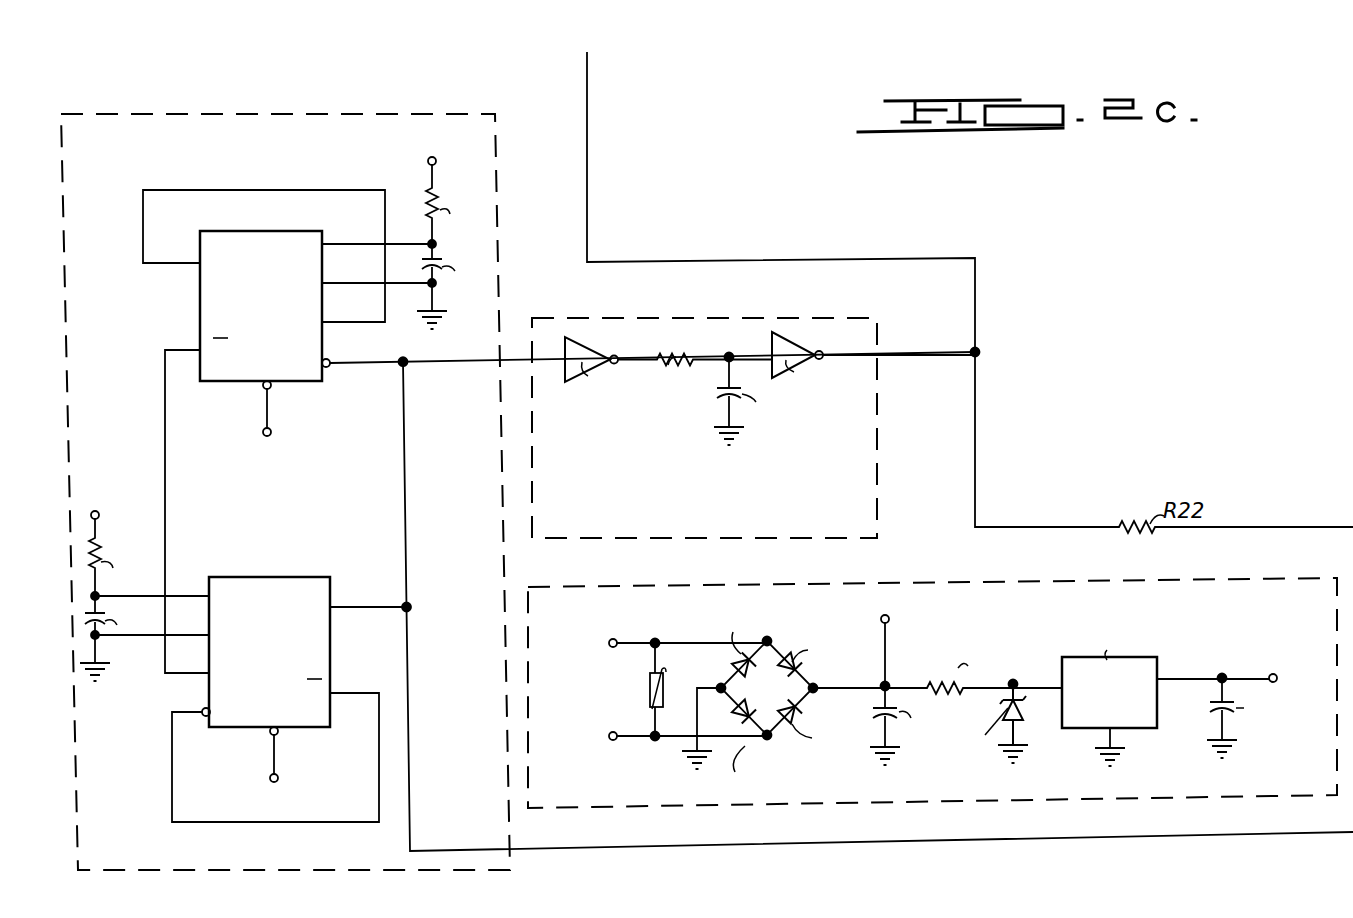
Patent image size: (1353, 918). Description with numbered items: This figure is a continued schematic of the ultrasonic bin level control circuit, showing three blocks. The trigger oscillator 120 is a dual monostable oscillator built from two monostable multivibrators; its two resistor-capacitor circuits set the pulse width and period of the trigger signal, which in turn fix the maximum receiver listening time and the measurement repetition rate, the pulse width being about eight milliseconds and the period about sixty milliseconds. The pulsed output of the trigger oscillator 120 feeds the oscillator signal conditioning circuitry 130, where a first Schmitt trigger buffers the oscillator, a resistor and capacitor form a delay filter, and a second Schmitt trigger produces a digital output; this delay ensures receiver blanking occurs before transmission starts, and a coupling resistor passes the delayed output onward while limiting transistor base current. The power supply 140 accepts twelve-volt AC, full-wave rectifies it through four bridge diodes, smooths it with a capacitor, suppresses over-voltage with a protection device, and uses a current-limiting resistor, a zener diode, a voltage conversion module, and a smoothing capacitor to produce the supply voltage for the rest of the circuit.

The trigger oscillator 120 is at (707, 492).
The oscillator signal conditioning circuitry 130 is at (753, 428).
The power supply 140 is at (932, 693).